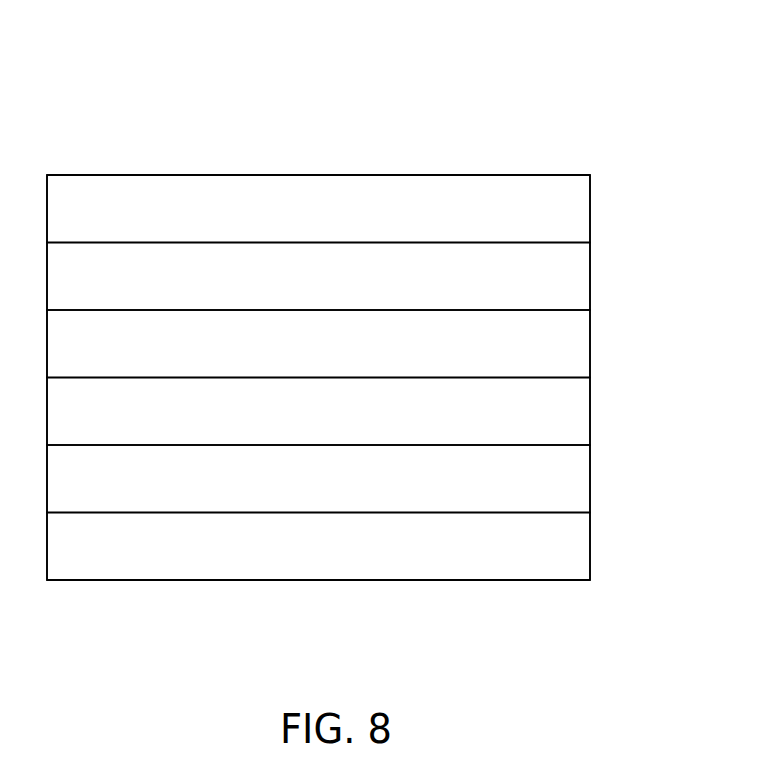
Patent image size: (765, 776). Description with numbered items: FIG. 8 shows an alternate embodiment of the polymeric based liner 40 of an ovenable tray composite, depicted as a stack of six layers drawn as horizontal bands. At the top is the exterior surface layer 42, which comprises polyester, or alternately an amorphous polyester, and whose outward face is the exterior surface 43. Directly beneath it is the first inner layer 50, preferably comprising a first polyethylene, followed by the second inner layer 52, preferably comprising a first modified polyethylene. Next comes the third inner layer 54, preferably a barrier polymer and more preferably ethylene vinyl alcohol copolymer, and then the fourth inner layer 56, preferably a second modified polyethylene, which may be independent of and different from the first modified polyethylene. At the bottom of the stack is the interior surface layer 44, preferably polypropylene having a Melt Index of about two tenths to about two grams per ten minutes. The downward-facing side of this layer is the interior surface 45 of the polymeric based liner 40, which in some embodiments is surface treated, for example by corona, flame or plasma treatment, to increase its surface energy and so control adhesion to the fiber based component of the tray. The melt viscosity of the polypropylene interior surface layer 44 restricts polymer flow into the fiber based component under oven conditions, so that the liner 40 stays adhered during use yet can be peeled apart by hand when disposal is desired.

The polymeric based liner 40 is at (542, 92).
The exterior surface layer 42 is at (557, 211).
The exterior surface 43 is at (307, 175).
The interior surface layer 44 is at (557, 548).
The interior surface 45 is at (235, 580).
The first inner layer 50 is at (557, 278).
The second inner layer 52 is at (557, 346).
The third inner layer 54 is at (557, 414).
The fourth inner layer 56 is at (557, 481).